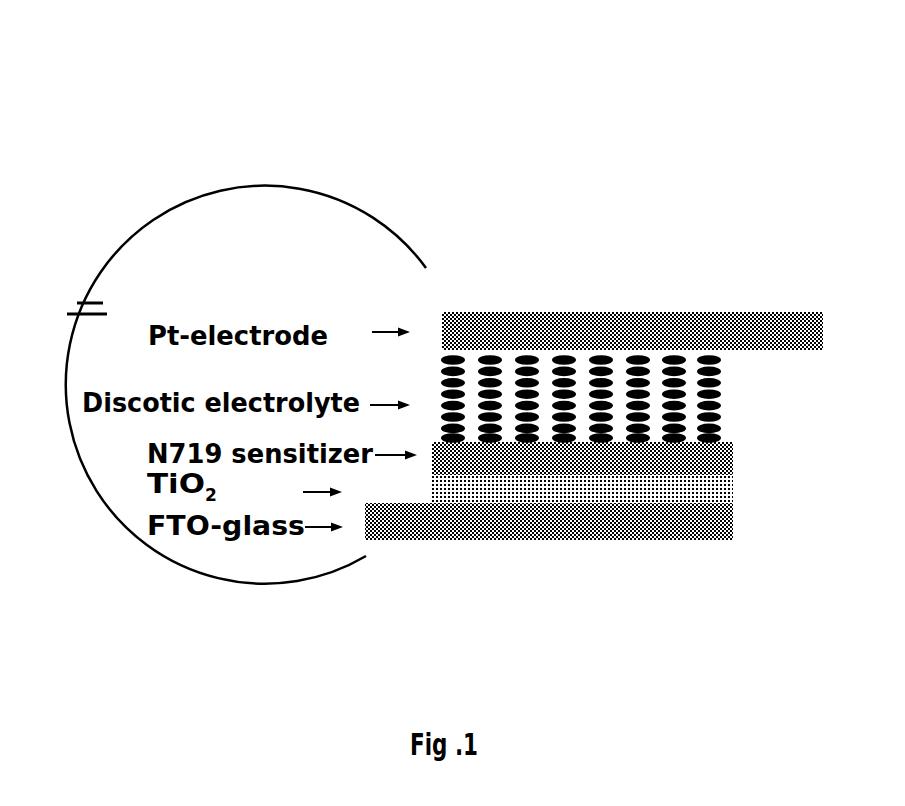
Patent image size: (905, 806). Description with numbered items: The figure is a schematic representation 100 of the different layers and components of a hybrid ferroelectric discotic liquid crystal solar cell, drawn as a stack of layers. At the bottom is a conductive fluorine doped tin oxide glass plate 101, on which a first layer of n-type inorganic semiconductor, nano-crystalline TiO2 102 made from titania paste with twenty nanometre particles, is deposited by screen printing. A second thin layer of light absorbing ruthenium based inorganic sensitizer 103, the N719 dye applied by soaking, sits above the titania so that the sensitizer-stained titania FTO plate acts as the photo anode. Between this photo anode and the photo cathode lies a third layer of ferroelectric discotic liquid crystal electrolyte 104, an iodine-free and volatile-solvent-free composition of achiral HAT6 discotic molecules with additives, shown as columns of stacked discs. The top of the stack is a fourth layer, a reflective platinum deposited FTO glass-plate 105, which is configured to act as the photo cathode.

The schematic representation 100 is at (114, 98).
The conductive fluorine doped tin oxide (FTO) glass plate 101 is at (532, 534).
The nano-crystalline TiO2 102 is at (645, 500).
The light absorbing ruthenium based inorganic sensitizer 103 is at (685, 459).
The ferroelectric discotic liquid crystal electrolyte 104 is at (733, 369).
The reflective platinum deposited FTO glass-plate 105 is at (562, 333).